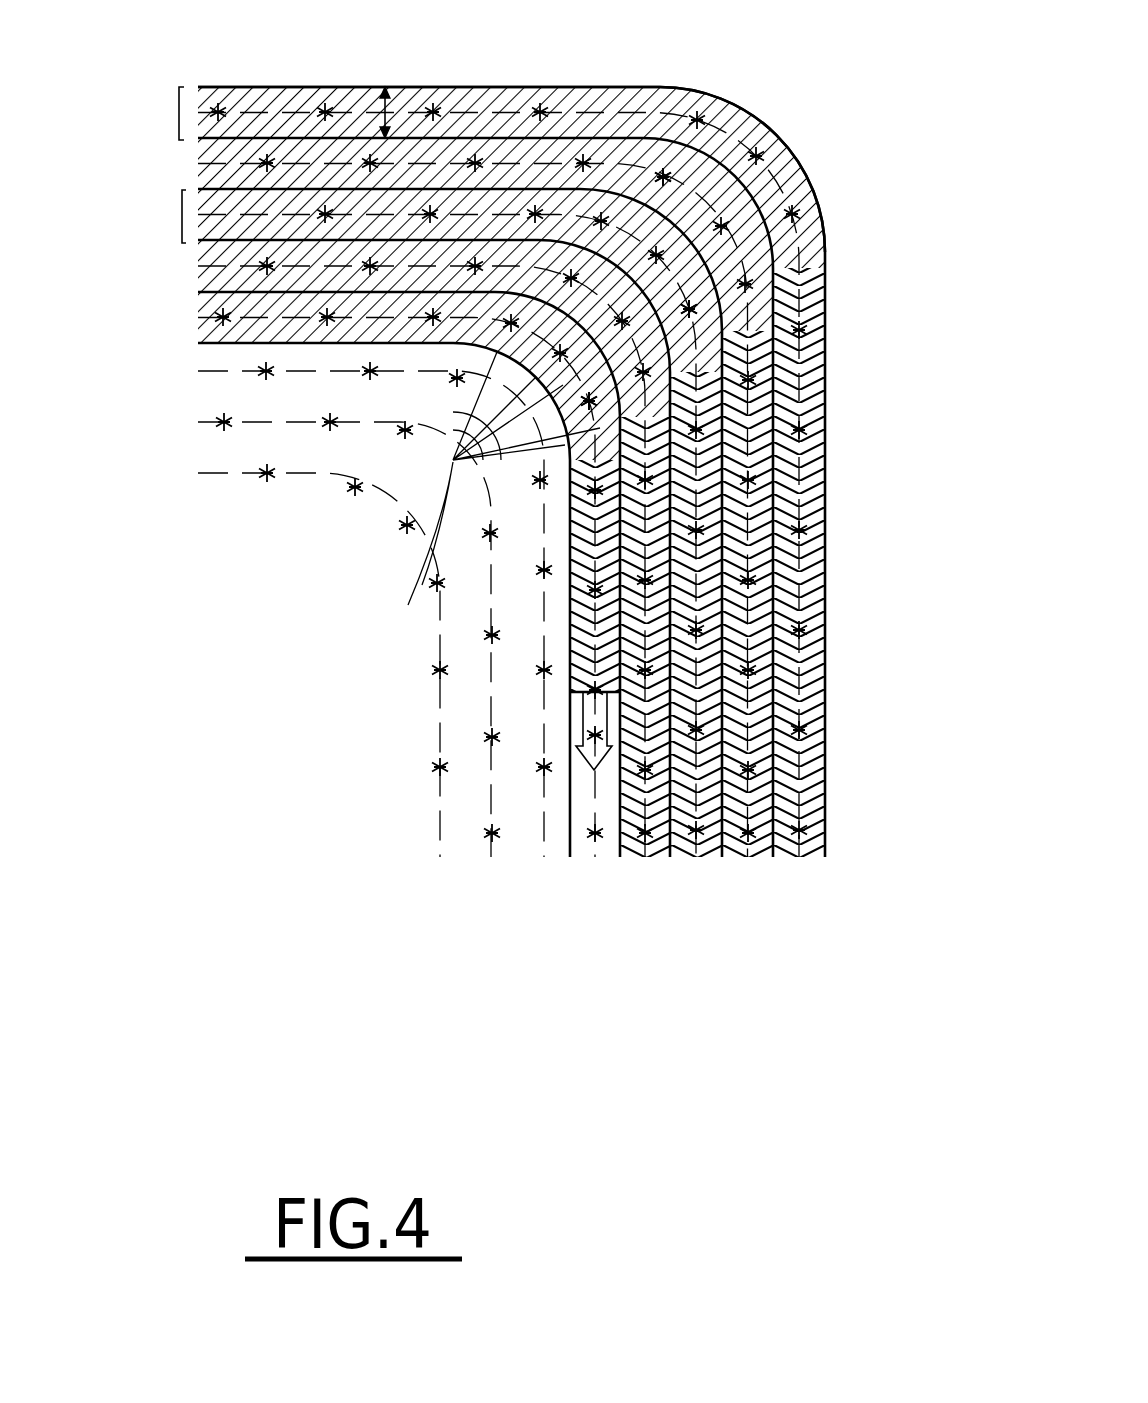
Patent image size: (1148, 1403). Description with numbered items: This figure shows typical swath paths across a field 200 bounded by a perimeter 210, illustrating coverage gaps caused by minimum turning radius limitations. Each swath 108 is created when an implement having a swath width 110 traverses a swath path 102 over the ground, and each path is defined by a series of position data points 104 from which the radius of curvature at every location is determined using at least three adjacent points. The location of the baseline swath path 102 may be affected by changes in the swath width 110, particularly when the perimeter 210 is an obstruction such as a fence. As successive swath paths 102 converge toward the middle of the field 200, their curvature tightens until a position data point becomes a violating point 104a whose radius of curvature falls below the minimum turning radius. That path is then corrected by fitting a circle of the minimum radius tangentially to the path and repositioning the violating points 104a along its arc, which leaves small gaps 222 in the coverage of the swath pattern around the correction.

The swath path 102 is at (495, 577).
The position data points 104 is at (498, 95).
The violating point 104a is at (595, 370).
The swath 108 is at (177, 112).
The swath width 110 is at (383, 87).
The field 200 is at (495, 577).
The perimeter 210 is at (303, 87).
The gaps 222 is at (724, 92).